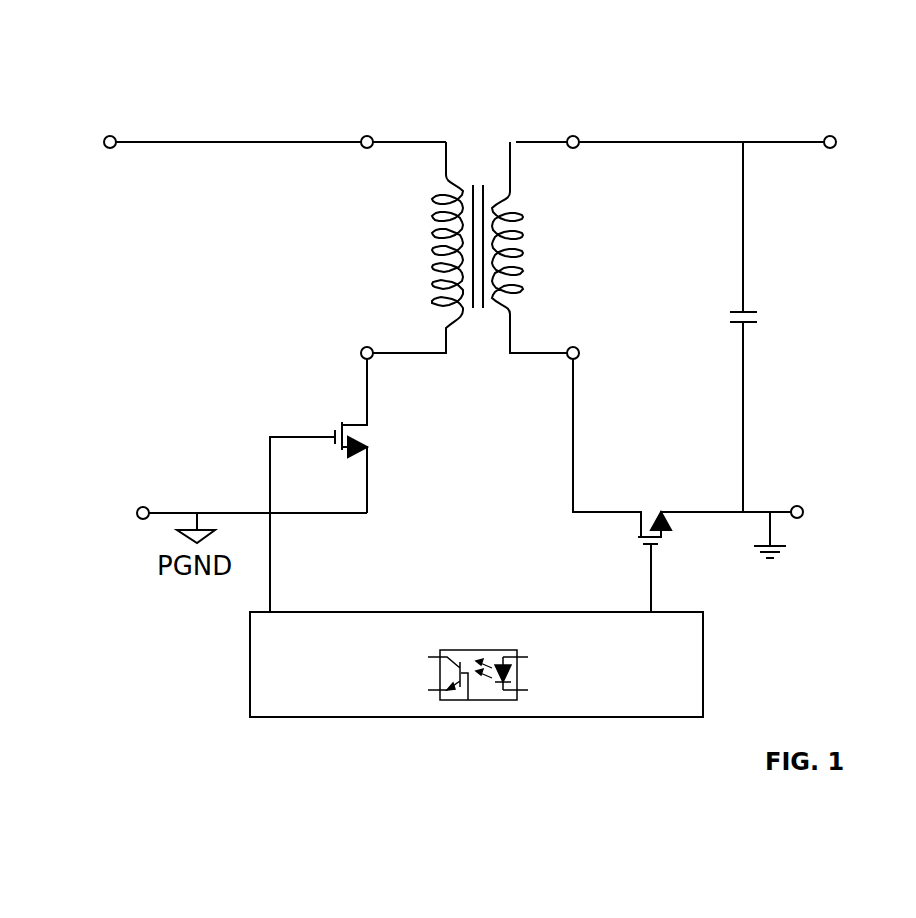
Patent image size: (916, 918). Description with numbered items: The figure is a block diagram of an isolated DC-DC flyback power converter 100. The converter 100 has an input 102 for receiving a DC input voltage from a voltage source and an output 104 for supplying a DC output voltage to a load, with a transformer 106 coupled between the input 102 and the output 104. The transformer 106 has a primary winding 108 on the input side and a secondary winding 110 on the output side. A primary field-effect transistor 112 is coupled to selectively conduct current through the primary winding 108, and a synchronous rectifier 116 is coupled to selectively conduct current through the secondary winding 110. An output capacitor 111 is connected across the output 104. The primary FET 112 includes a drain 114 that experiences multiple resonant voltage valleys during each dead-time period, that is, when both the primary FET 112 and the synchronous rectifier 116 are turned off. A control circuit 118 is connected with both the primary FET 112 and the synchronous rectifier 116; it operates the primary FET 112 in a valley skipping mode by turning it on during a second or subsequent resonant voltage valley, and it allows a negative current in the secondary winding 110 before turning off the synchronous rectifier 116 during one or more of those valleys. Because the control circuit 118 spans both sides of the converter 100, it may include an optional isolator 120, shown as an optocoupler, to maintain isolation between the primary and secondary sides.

The isolated DC-DC flyback power converter 100 is at (115, 50).
The input 102 is at (108, 136).
The output 104 is at (834, 136).
The transformer 106 is at (477, 227).
The primary winding 108 is at (432, 250).
The secondary winding 110 is at (521, 268).
The output capacitor 111 is at (733, 312).
The primary field-effect transistor 112 is at (338, 424).
The drain 114 is at (370, 402).
The synchronous rectifier 116 is at (655, 500).
The control circuit 118 is at (442, 681).
The isolator 120 is at (457, 702).